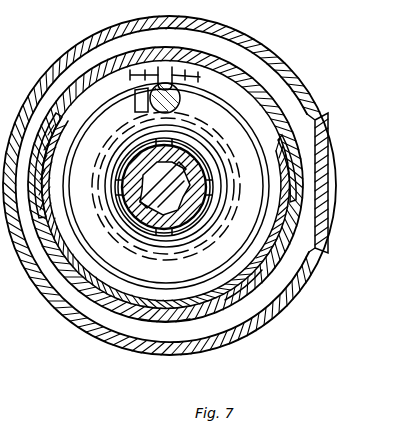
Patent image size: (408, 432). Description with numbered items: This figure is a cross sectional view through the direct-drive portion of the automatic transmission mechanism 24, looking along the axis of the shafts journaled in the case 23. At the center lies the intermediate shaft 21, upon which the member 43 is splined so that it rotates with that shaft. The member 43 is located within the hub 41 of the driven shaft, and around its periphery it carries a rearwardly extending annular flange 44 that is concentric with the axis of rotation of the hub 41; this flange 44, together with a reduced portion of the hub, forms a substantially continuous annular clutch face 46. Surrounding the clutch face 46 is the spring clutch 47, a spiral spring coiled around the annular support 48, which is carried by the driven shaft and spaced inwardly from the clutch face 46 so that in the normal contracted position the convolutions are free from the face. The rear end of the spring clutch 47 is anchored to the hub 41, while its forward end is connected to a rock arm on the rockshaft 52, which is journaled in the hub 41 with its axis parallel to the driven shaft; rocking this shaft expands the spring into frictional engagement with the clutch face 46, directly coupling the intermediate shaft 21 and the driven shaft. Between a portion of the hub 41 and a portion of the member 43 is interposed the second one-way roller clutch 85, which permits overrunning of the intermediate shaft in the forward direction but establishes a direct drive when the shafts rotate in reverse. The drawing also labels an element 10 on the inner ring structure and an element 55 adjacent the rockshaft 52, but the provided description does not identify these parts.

The clutch housing member 10 is at (118, 82).
The intermediate shaft 21 is at (190, 198).
The case 23 is at (314, 276).
The automatic transmission mechanism 24 is at (110, 316).
The hub 41 is at (276, 110).
The member 43 is at (150, 222).
The annular flange 44 is at (165, 310).
The annular clutch face 46 is at (106, 287).
The spring clutch 47 is at (130, 296).
The annular support 48 is at (197, 300).
The rockshaft 52 is at (182, 95).
The roller detent 55 is at (187, 87).
The second one-way roller clutch 85 is at (124, 212).